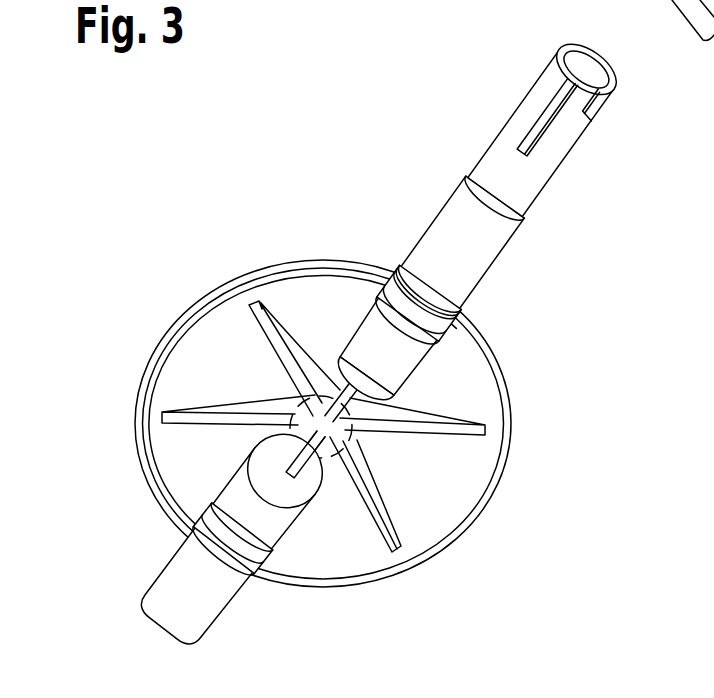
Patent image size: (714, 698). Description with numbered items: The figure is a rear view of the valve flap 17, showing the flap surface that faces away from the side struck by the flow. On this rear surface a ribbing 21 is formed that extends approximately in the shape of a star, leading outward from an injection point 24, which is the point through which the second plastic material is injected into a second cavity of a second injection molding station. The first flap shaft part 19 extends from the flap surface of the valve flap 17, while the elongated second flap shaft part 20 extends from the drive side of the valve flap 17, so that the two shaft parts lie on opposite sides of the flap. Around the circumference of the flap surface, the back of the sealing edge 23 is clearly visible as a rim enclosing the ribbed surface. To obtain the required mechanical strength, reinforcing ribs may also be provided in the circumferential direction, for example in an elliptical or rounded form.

The valve flap 17 is at (163, 222).
The first flap shaft part 19 is at (182, 582).
The second flap shaft part 20 is at (527, 185).
The ribbing 21 is at (421, 422).
The sealing edge 23 is at (140, 400).
The injection point 24 is at (355, 412).